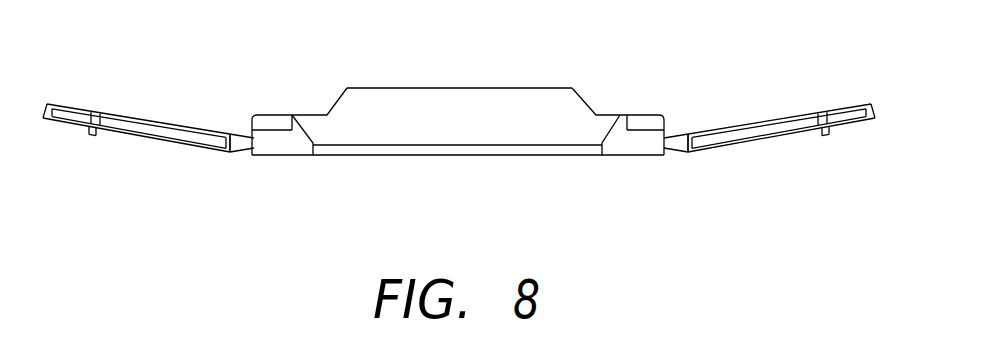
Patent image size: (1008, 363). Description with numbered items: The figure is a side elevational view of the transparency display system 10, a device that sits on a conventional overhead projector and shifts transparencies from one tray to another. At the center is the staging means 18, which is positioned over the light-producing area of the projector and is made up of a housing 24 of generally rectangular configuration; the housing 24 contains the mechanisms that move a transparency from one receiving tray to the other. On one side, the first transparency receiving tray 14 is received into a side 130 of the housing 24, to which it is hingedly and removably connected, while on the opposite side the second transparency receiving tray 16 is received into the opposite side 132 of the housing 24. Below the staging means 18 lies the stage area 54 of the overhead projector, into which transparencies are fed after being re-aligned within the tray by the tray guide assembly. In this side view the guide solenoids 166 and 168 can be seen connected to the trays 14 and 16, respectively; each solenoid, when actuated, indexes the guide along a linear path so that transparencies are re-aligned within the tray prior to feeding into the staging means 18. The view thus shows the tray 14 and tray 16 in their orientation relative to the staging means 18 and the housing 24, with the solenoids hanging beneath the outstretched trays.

The transparency display system 10 is at (660, 78).
The first transparency receiving tray 14 is at (790, 116).
The second transparency receiving tray 16 is at (127, 122).
The staging means 18 is at (560, 103).
The housing 24 is at (348, 107).
The stage area 54 is at (427, 150).
The side of the housing 130 is at (675, 157).
The opposite side of the housing 132 is at (242, 153).
The guide solenoid 166 is at (823, 140).
The guide solenoid 168 is at (103, 135).